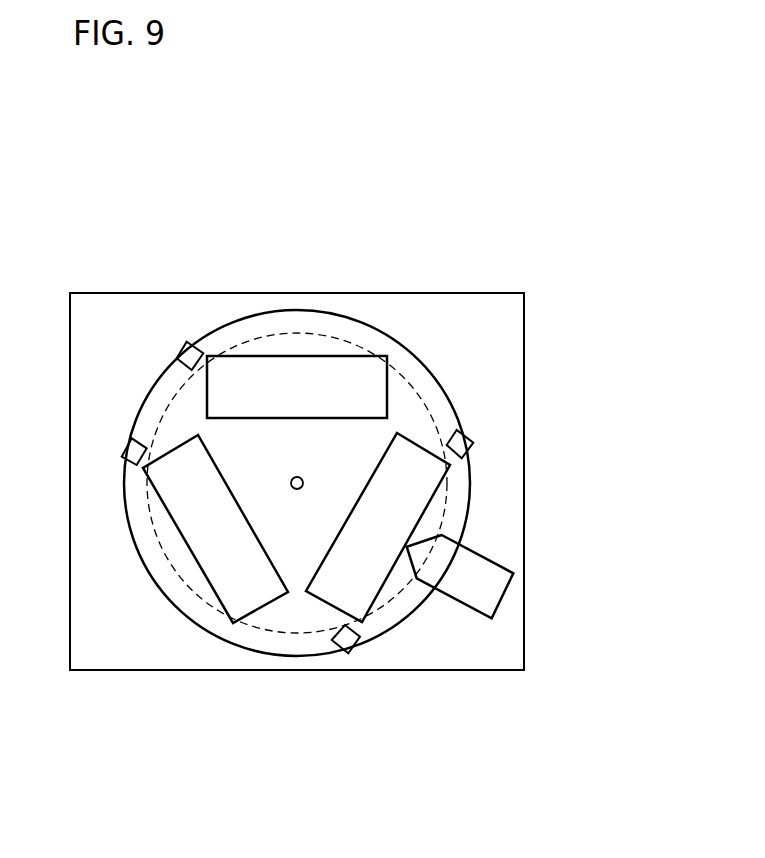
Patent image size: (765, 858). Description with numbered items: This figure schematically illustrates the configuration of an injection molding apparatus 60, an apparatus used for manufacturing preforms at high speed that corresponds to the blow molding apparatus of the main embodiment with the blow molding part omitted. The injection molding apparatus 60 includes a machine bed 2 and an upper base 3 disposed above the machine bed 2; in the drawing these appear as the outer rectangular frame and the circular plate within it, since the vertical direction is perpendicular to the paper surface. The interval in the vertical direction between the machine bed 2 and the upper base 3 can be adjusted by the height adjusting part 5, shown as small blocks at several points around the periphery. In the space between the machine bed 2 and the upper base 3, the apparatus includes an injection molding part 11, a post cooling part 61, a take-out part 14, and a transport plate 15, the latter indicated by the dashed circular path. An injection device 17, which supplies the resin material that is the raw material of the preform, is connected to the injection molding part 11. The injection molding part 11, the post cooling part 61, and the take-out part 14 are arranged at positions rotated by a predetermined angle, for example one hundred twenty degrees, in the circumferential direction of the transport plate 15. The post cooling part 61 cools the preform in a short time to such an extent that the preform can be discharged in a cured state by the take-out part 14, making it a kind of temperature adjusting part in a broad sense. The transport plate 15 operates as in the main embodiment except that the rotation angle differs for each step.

The injection molding apparatus 60 is at (498, 218).
The machine bed 2 is at (525, 381).
The upper base 3 is at (418, 352).
The height adjusting part 5 is at (184, 343).
The injection molding part 11 is at (433, 502).
The take-out part 14 is at (208, 582).
The transport plate 15 is at (277, 332).
The injection device 17 is at (501, 598).
The post cooling part 61 is at (334, 354).